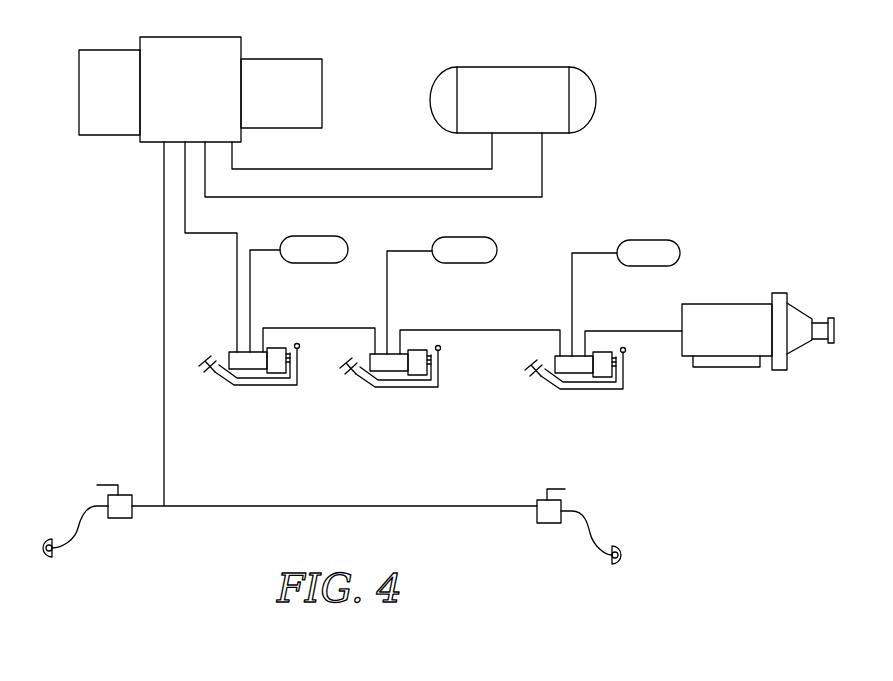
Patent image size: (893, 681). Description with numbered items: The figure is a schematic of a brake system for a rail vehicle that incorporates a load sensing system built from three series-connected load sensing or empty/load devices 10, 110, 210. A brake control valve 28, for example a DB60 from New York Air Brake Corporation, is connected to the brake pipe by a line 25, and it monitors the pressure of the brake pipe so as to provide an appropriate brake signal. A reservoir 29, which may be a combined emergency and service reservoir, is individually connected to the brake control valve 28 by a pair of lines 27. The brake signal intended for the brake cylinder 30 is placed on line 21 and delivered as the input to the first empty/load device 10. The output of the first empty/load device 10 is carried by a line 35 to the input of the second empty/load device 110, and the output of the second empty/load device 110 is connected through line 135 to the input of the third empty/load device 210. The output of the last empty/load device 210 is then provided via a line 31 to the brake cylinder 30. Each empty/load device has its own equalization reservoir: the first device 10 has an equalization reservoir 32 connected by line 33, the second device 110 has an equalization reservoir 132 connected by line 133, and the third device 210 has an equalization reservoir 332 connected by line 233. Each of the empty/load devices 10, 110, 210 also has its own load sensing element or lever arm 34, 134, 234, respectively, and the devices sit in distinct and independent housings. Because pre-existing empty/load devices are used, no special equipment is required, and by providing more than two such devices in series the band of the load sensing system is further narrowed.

The empty/load device 10 is at (251, 404).
The second empty/load device 110 is at (411, 405).
The third empty/load device 210 is at (596, 406).
The line 21 is at (208, 235).
The line 25 is at (163, 383).
The lines 27 is at (340, 197).
The brake control valve 28 is at (217, 41).
The reservoir 29 is at (515, 78).
The brake cylinder 30 is at (745, 317).
The line 31 is at (653, 331).
The equalization reservoir 32 is at (302, 245).
The equalization reservoir 132 is at (453, 247).
The equalization reservoir 332 is at (638, 250).
The line 33 is at (252, 295).
The line 133 is at (385, 298).
The line 233 is at (570, 300).
The lever arm 34 is at (225, 383).
The lever arm 134 is at (393, 400).
The lever arm 234 is at (578, 405).
The line 35 is at (315, 327).
The line 135 is at (473, 330).